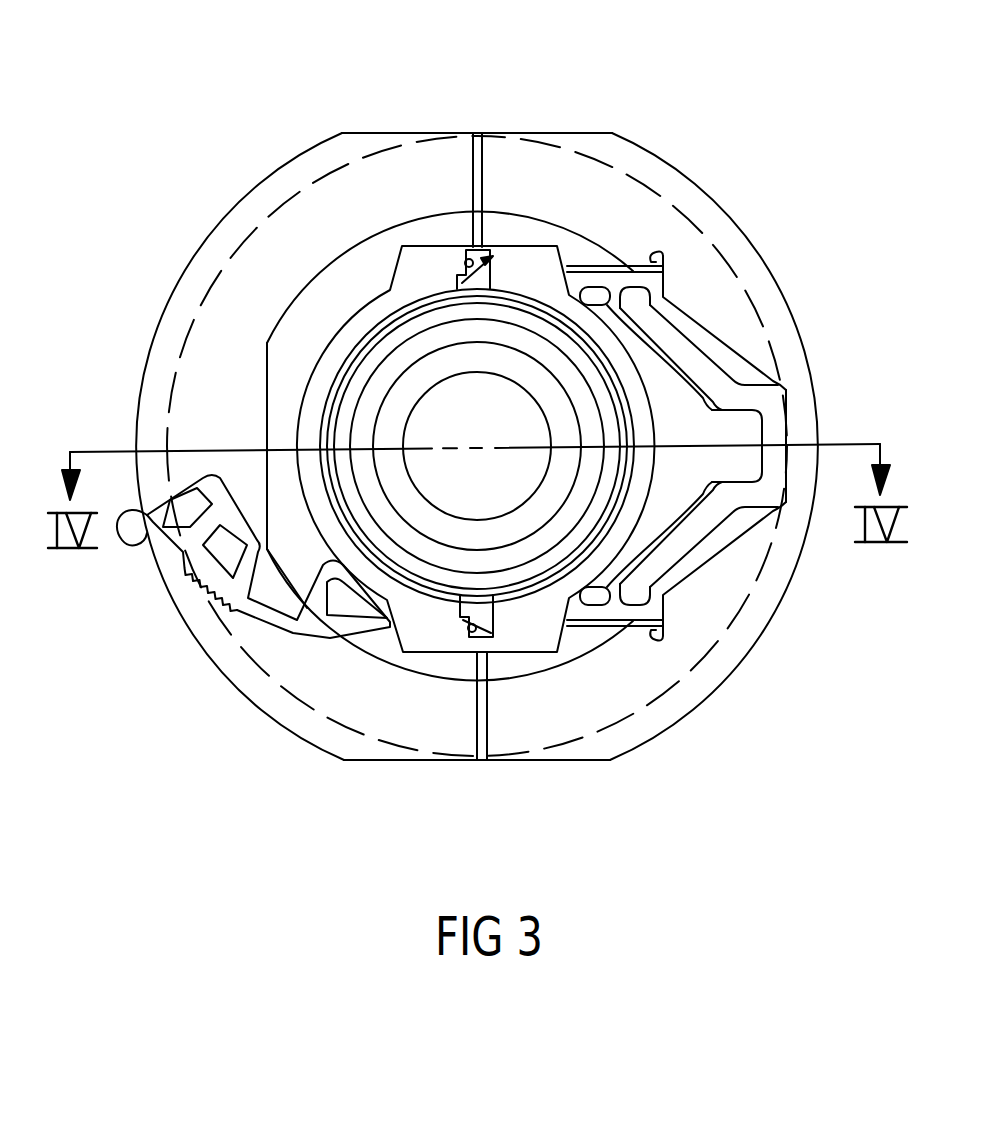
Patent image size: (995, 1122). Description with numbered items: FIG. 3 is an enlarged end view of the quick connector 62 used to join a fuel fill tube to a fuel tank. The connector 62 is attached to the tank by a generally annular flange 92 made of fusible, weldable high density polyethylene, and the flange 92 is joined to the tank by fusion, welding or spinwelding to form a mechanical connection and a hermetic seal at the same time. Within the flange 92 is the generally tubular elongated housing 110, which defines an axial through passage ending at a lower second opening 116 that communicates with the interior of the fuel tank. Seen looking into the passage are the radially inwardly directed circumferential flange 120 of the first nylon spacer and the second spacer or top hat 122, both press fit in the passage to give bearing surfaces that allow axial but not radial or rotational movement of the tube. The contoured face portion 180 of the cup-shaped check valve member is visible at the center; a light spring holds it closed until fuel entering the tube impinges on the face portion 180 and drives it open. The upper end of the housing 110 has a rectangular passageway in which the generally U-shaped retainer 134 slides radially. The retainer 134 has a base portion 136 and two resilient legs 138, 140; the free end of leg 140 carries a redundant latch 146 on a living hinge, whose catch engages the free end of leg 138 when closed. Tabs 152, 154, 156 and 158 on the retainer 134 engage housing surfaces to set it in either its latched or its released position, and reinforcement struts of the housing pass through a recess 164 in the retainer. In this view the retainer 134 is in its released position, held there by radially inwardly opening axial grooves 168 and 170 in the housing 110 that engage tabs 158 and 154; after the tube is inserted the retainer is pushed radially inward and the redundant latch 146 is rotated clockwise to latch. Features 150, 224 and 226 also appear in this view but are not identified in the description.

The quick connector 62 is at (738, 149).
The annular flange 92 is at (362, 108).
The housing 110 is at (348, 287).
The second opening 116 is at (400, 405).
The circumferential flange 120 is at (397, 360).
The top hat 122 is at (355, 392).
The retainer 134 is at (740, 595).
The base portion 136 is at (777, 420).
The leg 138 is at (458, 279).
The leg 140 is at (472, 628).
The redundant latch 146 is at (257, 612).
The lever hook 150 is at (120, 548).
The tab 152 is at (657, 634).
The tab 154 is at (479, 625).
The tab 156 is at (648, 257).
The tab 158 is at (496, 256).
The recess 164 is at (737, 422).
The axial groove 168 is at (470, 262).
The axial groove 170 is at (475, 633).
The face portion 180 is at (508, 494).
The housing side wall 224 is at (265, 385).
The flat surface 226 is at (598, 132).